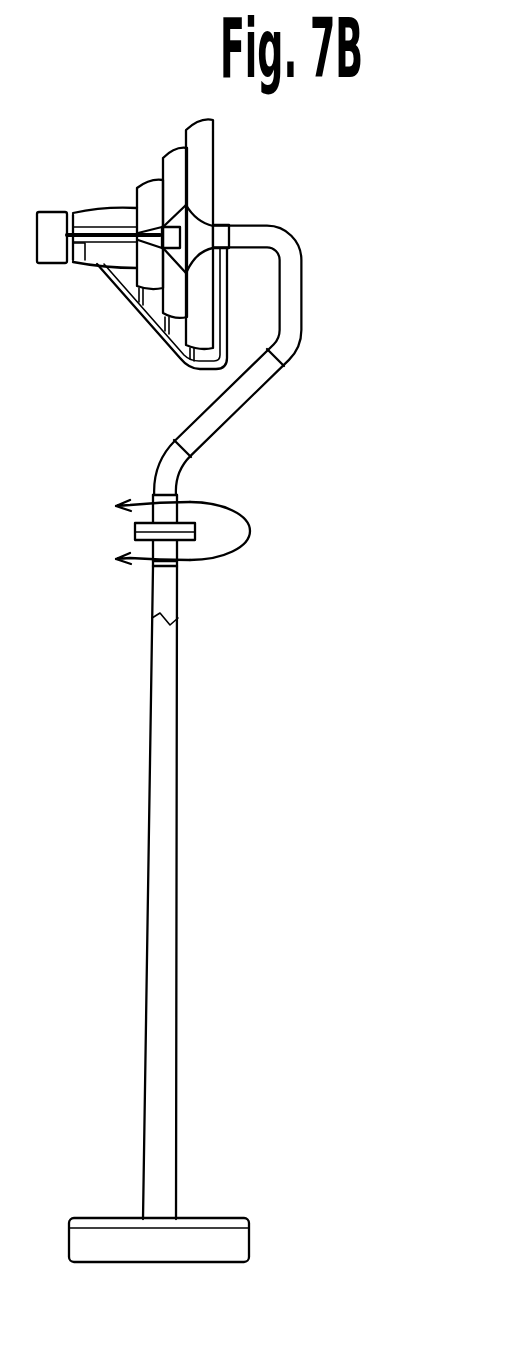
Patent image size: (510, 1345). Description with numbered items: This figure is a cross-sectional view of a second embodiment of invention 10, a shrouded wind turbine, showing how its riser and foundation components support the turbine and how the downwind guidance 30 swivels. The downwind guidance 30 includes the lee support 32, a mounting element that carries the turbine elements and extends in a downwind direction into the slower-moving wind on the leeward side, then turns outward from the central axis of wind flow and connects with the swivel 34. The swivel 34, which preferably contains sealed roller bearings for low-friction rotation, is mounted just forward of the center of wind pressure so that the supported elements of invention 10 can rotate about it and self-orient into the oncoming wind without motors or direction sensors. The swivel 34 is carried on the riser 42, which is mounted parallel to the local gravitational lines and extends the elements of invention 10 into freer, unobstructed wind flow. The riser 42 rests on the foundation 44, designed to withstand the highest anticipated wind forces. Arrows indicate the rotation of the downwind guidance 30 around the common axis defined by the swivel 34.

The invention 10 is at (200, 690).
The downwind guidance 30 is at (298, 458).
The lee support 32 is at (290, 272).
The swivel 34 is at (135, 530).
The riser 42 is at (153, 852).
The foundation 44 is at (203, 1223).